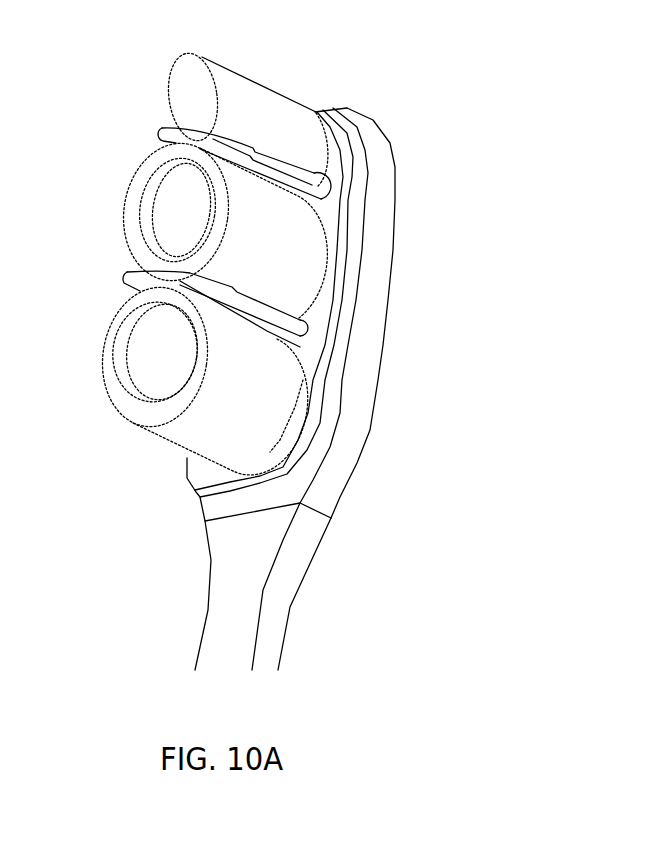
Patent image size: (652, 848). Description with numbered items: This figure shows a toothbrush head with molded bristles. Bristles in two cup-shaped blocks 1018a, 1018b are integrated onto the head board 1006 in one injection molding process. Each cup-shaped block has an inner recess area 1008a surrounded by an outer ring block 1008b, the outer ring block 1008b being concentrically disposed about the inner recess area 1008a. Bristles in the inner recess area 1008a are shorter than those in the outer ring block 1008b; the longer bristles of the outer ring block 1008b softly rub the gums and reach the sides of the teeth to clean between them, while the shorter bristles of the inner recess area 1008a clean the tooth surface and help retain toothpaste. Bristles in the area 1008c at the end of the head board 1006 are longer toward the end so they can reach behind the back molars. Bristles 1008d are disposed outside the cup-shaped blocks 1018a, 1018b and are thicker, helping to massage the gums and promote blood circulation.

The head board 1006 is at (375, 212).
The inner recess area 1008a is at (160, 368).
The outer ring block 1008b is at (200, 335).
The bristle area at toothbrush end 1008c is at (190, 79).
The bristles 1008d is at (307, 176).
The cup-shaped block 1018a is at (263, 243).
The cup-shaped block 1018b is at (258, 400).